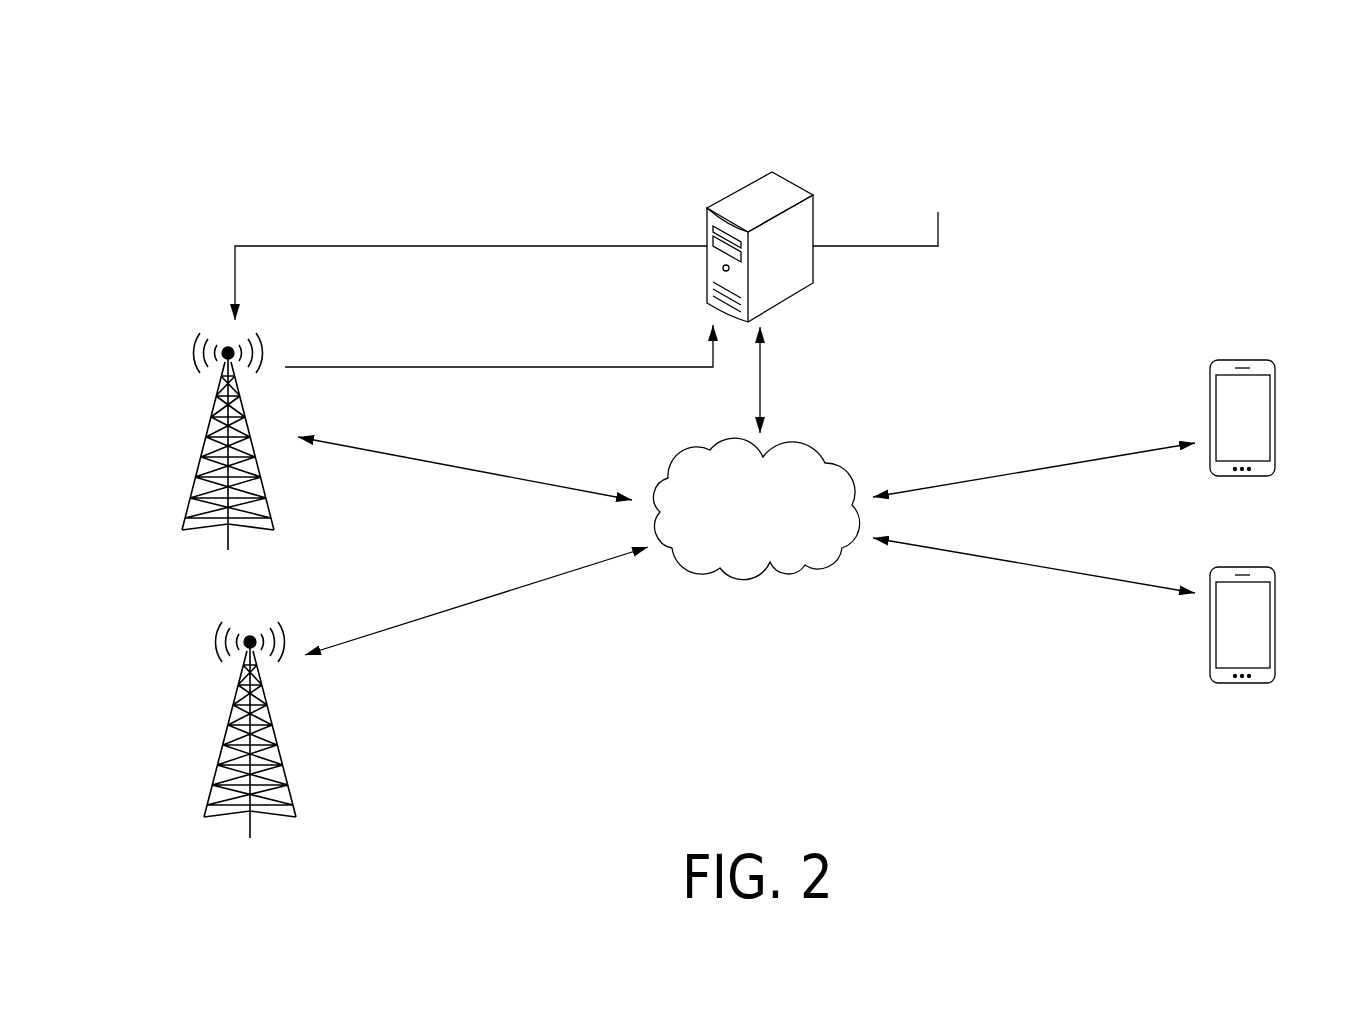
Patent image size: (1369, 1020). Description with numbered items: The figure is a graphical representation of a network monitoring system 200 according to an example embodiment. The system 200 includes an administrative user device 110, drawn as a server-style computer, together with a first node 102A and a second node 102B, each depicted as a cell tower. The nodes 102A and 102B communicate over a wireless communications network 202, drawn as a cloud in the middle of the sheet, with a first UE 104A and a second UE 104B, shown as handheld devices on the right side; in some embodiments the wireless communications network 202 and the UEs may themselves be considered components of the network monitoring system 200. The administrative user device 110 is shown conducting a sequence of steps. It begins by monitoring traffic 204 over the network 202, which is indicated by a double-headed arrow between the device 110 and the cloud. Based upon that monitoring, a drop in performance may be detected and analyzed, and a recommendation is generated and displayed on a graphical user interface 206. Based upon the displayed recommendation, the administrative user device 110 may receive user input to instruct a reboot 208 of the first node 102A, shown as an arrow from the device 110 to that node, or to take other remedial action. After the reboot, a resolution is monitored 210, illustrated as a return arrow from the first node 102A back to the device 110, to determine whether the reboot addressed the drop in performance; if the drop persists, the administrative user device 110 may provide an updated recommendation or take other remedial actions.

The network monitoring system 200 is at (236, 114).
The administrative user device 110 is at (744, 187).
The graphical user interface 206 is at (940, 148).
The instruct a reboot 208 is at (480, 218).
The resolution monitored 210 is at (515, 398).
The monitoring traffic 204 is at (832, 355).
The wireless communications network 202 is at (750, 578).
The first node 102A is at (192, 345).
The second node 102B is at (215, 634).
The first UE 104A is at (1277, 385).
The second UE 104B is at (1277, 590).